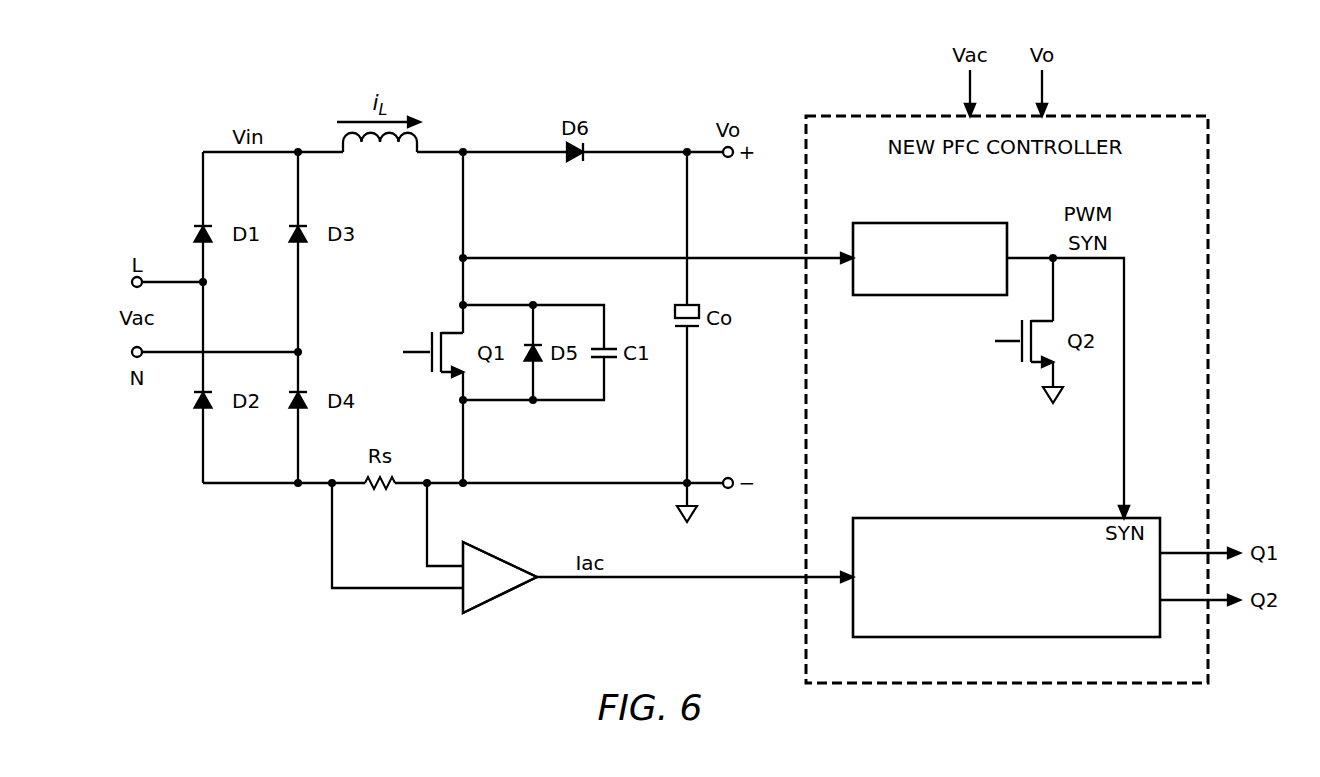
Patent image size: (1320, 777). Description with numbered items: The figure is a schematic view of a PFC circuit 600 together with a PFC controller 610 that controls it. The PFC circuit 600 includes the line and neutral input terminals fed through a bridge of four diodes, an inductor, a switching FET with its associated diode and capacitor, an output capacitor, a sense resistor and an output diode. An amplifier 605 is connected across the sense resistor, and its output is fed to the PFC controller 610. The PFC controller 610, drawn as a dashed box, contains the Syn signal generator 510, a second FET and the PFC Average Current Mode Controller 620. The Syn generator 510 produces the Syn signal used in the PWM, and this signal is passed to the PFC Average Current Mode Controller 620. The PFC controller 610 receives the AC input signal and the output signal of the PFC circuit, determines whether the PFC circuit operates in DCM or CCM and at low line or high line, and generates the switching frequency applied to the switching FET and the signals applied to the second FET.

The PFC circuit 600 is at (508, 72).
The amplifier 605 is at (500, 597).
The Syn signal generator 510 is at (930, 295).
The PFC controller 610 is at (1218, 220).
The PFC Average Current Mode Controller 620 is at (970, 518).